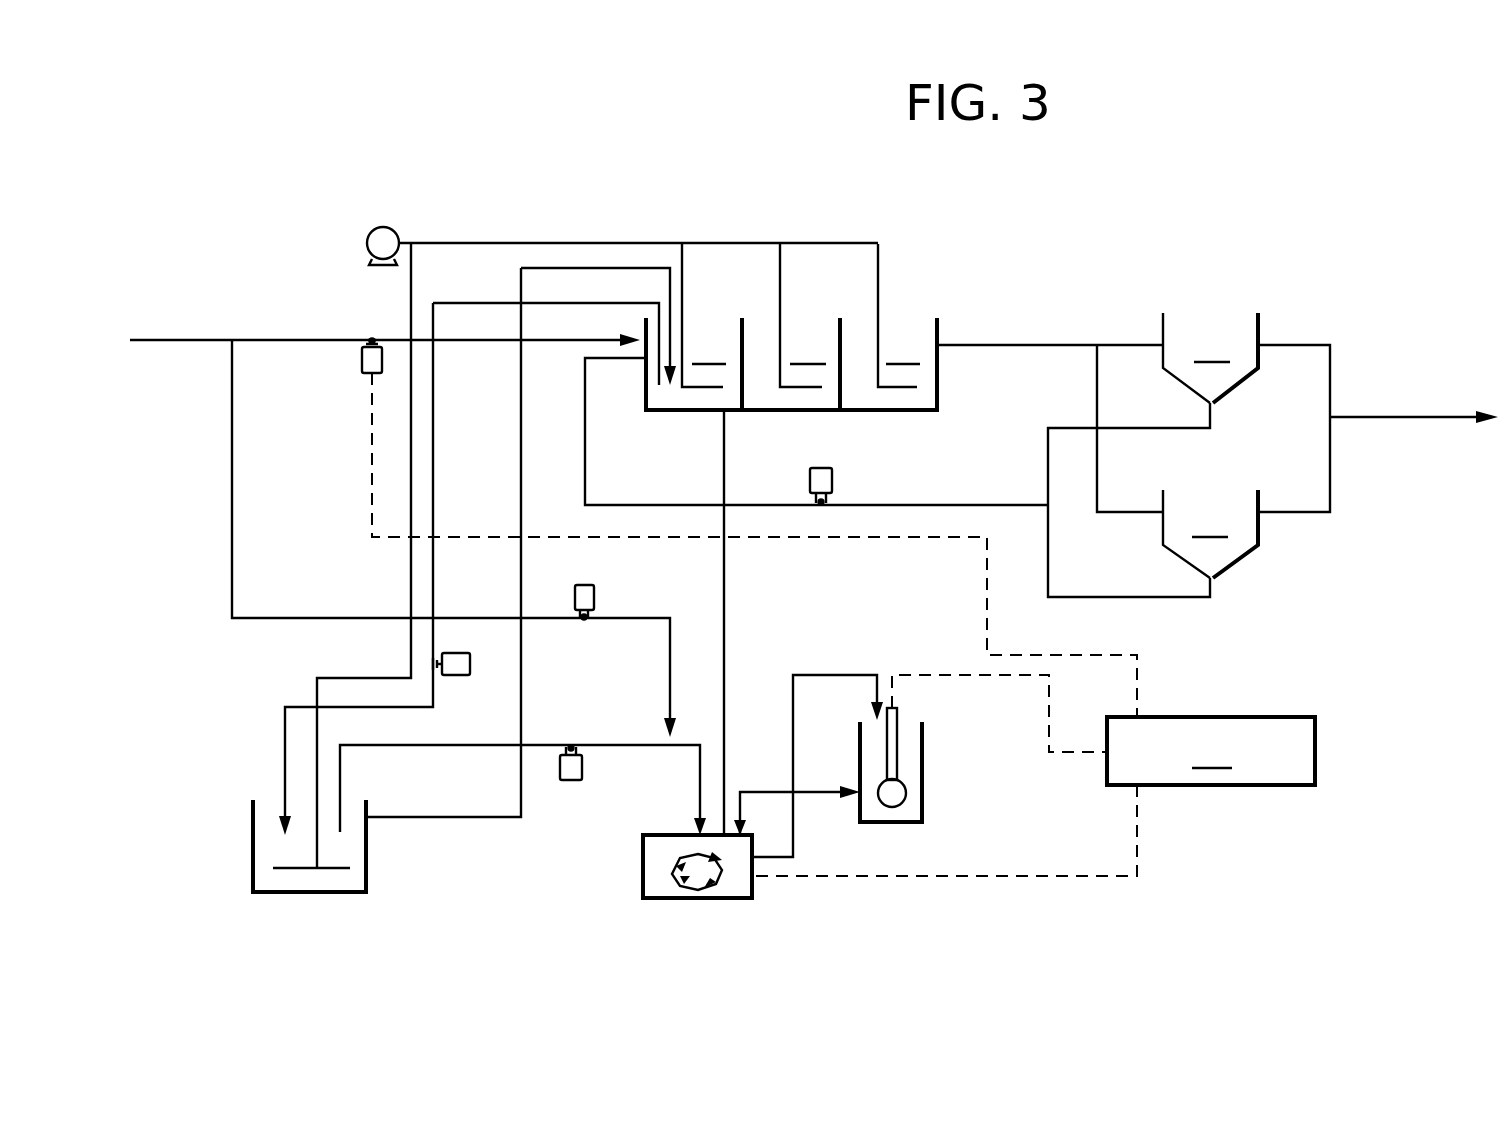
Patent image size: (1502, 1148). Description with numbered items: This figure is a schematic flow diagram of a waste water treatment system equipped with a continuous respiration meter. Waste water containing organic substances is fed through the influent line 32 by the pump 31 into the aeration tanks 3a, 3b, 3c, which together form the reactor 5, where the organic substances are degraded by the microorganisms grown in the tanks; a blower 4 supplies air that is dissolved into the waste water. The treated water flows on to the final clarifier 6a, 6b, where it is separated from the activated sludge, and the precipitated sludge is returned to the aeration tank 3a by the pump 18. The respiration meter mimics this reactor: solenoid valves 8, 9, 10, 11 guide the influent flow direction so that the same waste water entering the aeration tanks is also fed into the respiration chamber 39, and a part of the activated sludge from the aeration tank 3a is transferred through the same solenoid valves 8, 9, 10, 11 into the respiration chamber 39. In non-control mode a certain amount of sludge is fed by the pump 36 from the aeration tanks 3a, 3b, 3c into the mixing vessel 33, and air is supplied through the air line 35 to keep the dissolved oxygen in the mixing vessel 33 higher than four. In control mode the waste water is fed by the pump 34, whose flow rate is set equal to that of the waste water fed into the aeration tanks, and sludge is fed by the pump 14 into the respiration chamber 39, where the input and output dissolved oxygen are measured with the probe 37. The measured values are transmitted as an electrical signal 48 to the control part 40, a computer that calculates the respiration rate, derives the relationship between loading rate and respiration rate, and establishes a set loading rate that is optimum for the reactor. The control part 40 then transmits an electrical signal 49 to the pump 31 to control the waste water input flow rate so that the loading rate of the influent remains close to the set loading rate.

The aeration tank 3a is at (587, 327).
The aeration tank 3b is at (791, 327).
The aeration tank 3c is at (888, 327).
The blower 4 is at (390, 238).
The treatment tank 5 is at (685, 276).
The final clarifier 6a is at (1217, 455).
The final clarifier 6b is at (1210, 534).
The solenoid valve 8 is at (777, 672).
The solenoid valve 9 is at (777, 672).
The solenoid valve 10 is at (777, 672).
The solenoid valve 11 is at (750, 893).
The pump 14 is at (584, 770).
The pump 18 is at (832, 486).
The pump 31 is at (360, 368).
The influent line 32 is at (190, 338).
The mixing vessel 33 is at (364, 846).
The pump 34 is at (594, 598).
The air line 35 is at (410, 604).
The pump 36 is at (460, 668).
The probe 37 is at (900, 792).
The respiration chamber 39 is at (912, 754).
The control part 40 is at (1211, 751).
The electrical signal 48 is at (1048, 728).
The electrical signal 49 is at (1038, 655).